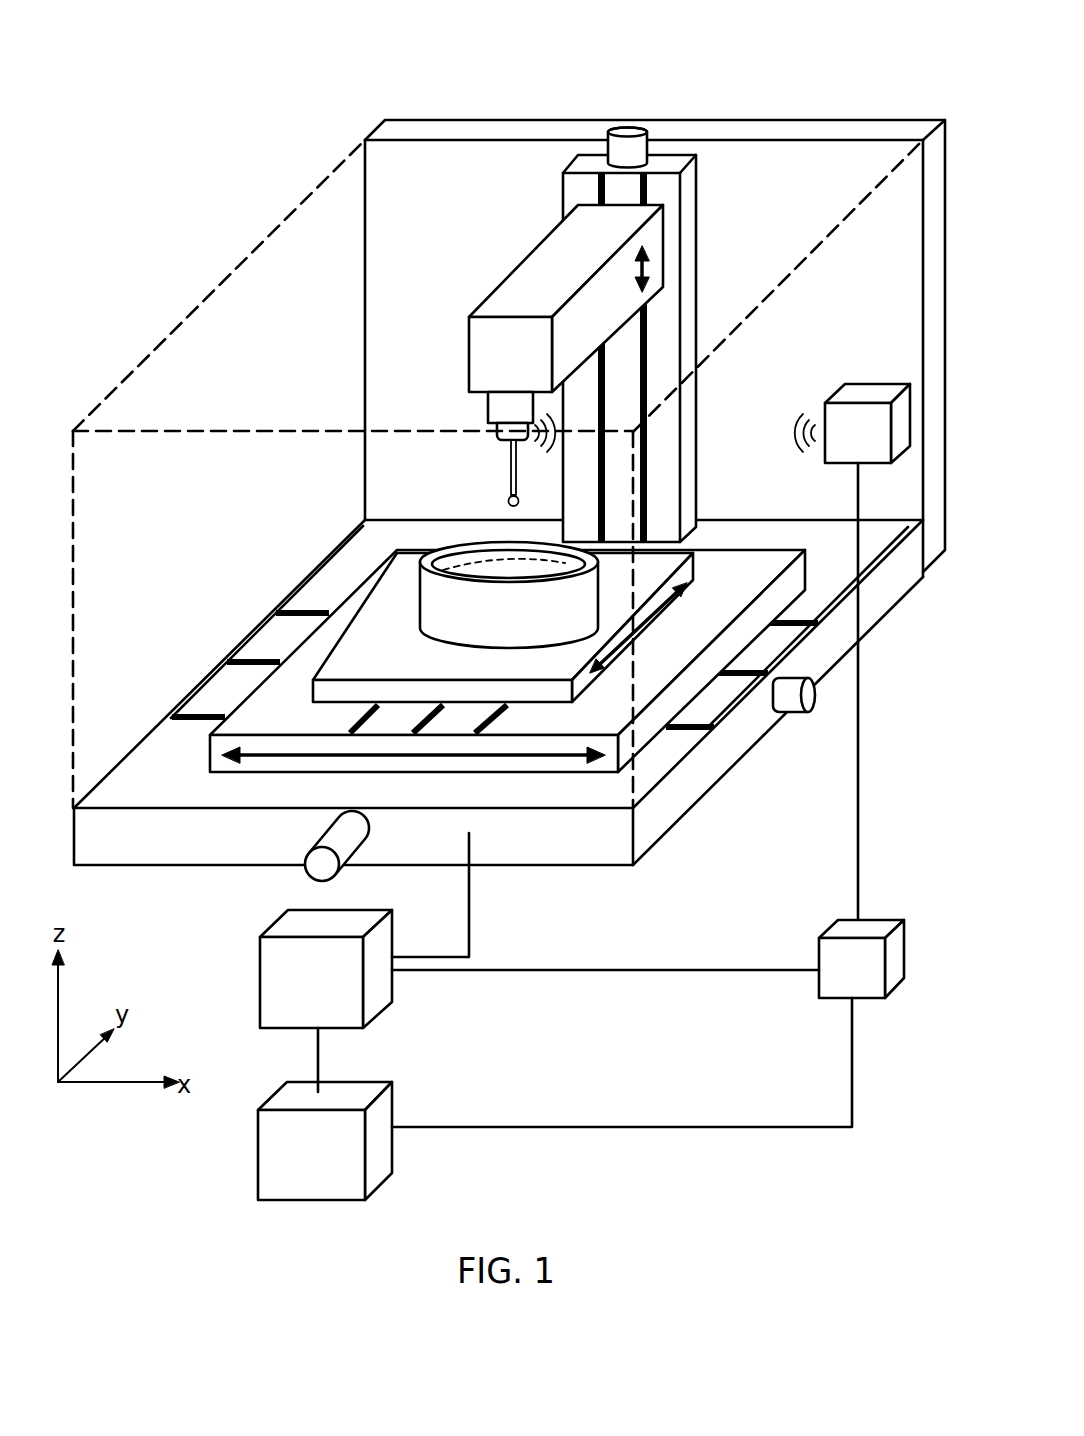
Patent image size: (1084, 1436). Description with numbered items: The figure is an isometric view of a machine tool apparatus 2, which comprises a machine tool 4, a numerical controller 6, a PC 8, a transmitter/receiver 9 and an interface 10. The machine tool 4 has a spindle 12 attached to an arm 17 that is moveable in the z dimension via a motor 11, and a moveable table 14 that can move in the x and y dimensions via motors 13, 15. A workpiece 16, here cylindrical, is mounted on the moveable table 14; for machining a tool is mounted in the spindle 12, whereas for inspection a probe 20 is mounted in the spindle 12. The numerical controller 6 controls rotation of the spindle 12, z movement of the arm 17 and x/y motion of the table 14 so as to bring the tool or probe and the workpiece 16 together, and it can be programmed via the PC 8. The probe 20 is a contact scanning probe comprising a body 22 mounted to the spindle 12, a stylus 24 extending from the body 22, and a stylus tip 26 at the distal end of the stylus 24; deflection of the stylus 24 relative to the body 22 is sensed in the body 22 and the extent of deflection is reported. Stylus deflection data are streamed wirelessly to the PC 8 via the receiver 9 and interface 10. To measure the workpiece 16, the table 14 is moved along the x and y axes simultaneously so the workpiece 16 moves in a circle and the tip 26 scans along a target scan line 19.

The machine tool apparatus 2 is at (145, 100).
The machine tool 4 is at (462, 138).
The numerical controller 6 is at (383, 938).
The PC 8 is at (390, 1103).
The transmitter/receiver 9 is at (848, 447).
The interface 10 is at (870, 983).
The motor 11 is at (627, 137).
The spindle 12 is at (497, 410).
The motor 13 is at (792, 697).
The moveable table 14 is at (379, 665).
The motor 15 is at (318, 868).
The workpiece 16 is at (428, 595).
The arm 17 is at (494, 373).
The target scan line 19 is at (507, 562).
The probe 20 is at (468, 454).
The body 22 is at (493, 436).
The stylus 24 is at (509, 467).
The stylus tip 26 is at (505, 503).